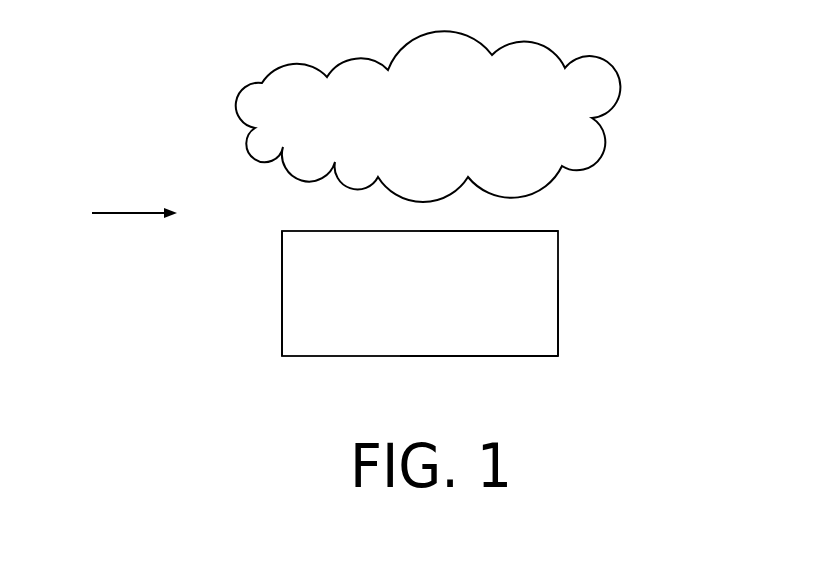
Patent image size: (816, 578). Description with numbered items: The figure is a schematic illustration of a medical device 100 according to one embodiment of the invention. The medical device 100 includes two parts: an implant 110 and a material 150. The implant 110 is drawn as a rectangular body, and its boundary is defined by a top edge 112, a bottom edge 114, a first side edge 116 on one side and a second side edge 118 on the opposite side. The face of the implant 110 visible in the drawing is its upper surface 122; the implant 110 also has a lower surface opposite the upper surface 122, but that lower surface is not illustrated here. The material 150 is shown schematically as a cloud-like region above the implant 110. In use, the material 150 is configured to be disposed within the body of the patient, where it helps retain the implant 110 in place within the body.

The medical device 100 is at (112, 215).
The implant 110 is at (538, 307).
The top edge 112 is at (525, 231).
The bottom edge 114 is at (517, 357).
The first side edge 116 is at (280, 323).
The second side edge 118 is at (560, 327).
The upper surface 122 is at (293, 275).
The material 150 is at (577, 147).